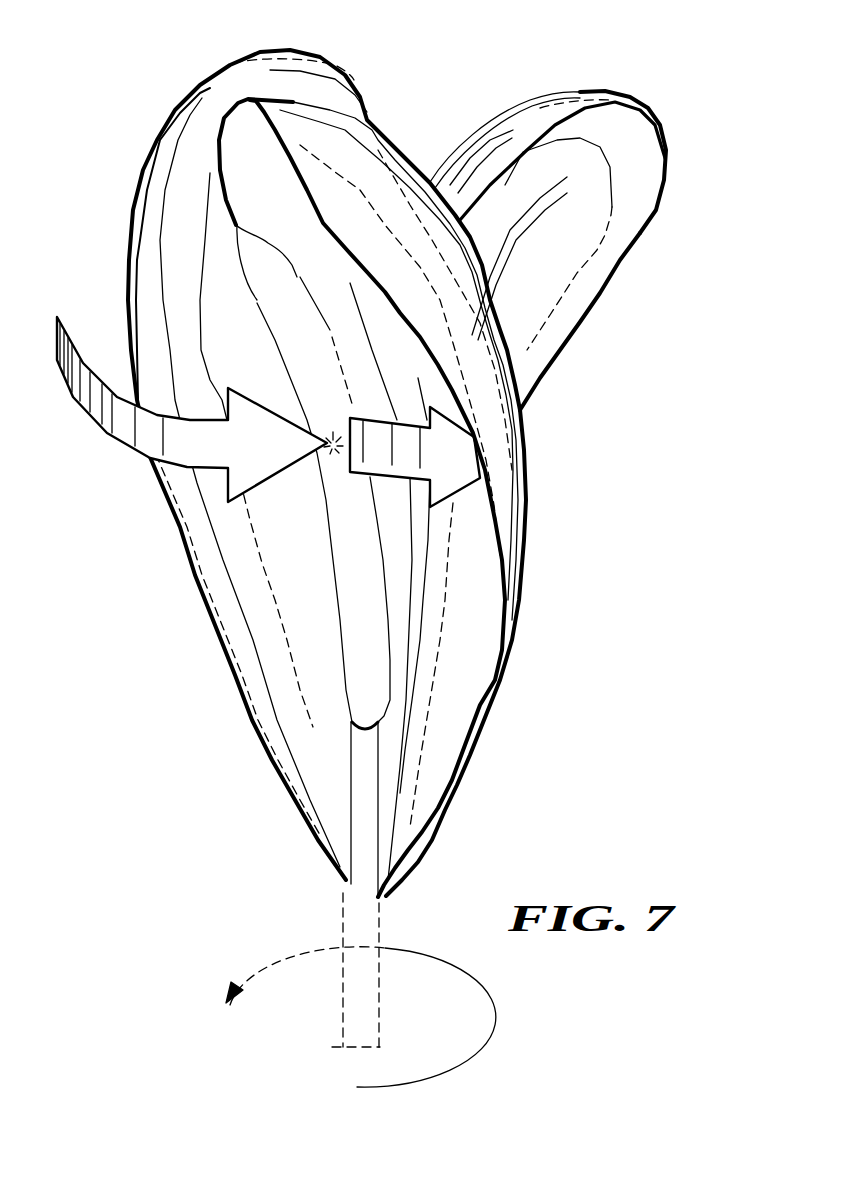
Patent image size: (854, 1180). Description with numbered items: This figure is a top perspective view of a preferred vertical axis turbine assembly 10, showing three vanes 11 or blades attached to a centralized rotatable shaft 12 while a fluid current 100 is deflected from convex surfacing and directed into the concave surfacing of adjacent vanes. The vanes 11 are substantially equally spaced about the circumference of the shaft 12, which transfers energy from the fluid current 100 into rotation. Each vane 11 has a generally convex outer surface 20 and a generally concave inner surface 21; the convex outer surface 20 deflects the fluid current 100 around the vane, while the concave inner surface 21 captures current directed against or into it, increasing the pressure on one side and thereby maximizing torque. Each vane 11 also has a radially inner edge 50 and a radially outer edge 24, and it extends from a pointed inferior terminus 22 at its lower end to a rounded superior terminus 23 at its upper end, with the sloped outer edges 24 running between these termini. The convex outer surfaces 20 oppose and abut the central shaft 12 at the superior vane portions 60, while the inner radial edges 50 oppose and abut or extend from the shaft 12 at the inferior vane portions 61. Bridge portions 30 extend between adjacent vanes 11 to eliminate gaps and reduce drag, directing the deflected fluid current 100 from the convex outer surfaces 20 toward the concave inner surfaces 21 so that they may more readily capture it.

The turbine assembly 10 is at (688, 116).
The vane 11 is at (228, 86).
The shaft 12 is at (342, 918).
The convex outer surface 20 is at (153, 323).
The concave inner surface 21 is at (643, 168).
The pointed inferior terminus 22 is at (393, 900).
The rounded superior terminus 23 is at (165, 136).
The sloped outer edge 24 is at (580, 327).
The bridge portion 30 is at (357, 607).
The radially inner edge 50 is at (360, 832).
The superior vane portion 60 is at (656, 260).
The inferior vane portion 61 is at (540, 670).
The fluid current 100 is at (125, 415).